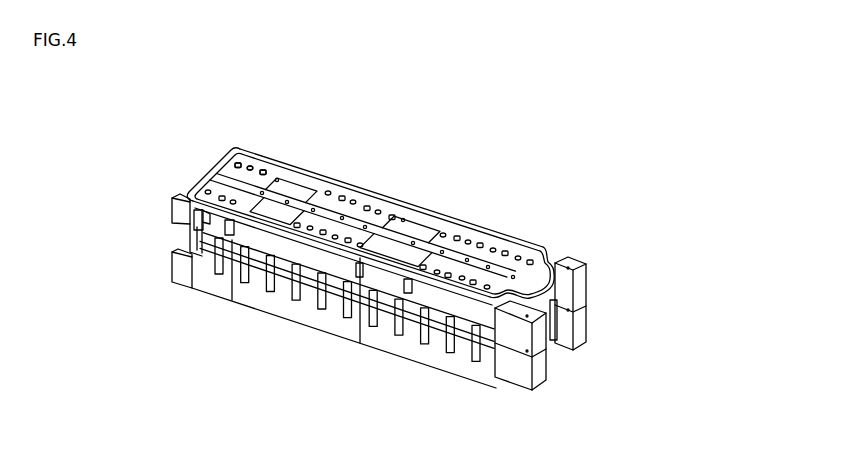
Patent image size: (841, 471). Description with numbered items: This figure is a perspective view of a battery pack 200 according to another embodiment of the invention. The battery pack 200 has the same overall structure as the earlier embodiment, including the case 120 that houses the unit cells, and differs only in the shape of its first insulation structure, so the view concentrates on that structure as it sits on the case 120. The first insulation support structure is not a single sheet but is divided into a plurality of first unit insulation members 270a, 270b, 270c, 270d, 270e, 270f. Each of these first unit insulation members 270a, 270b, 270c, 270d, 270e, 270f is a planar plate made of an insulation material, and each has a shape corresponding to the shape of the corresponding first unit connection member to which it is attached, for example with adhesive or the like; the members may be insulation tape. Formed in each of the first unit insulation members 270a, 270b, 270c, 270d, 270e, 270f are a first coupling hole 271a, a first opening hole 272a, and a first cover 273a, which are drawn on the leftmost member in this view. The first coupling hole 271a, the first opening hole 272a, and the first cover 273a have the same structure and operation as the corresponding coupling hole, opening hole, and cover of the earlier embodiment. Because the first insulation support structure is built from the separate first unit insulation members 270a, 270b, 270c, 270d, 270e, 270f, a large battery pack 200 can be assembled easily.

The battery pack 200 is at (116, 139).
The case 120 is at (154, 239).
The first unit insulation member 270a is at (230, 170).
The first unit insulation member 270b is at (205, 186).
The first unit insulation member 270c is at (378, 198).
The first unit insulation member 270d is at (325, 248).
The first unit insulation member 270e is at (511, 240).
The first unit insulation member 270f is at (443, 288).
The first coupling hole 271a is at (268, 171).
The first opening hole 272a is at (240, 162).
The first cover 273a is at (254, 166).